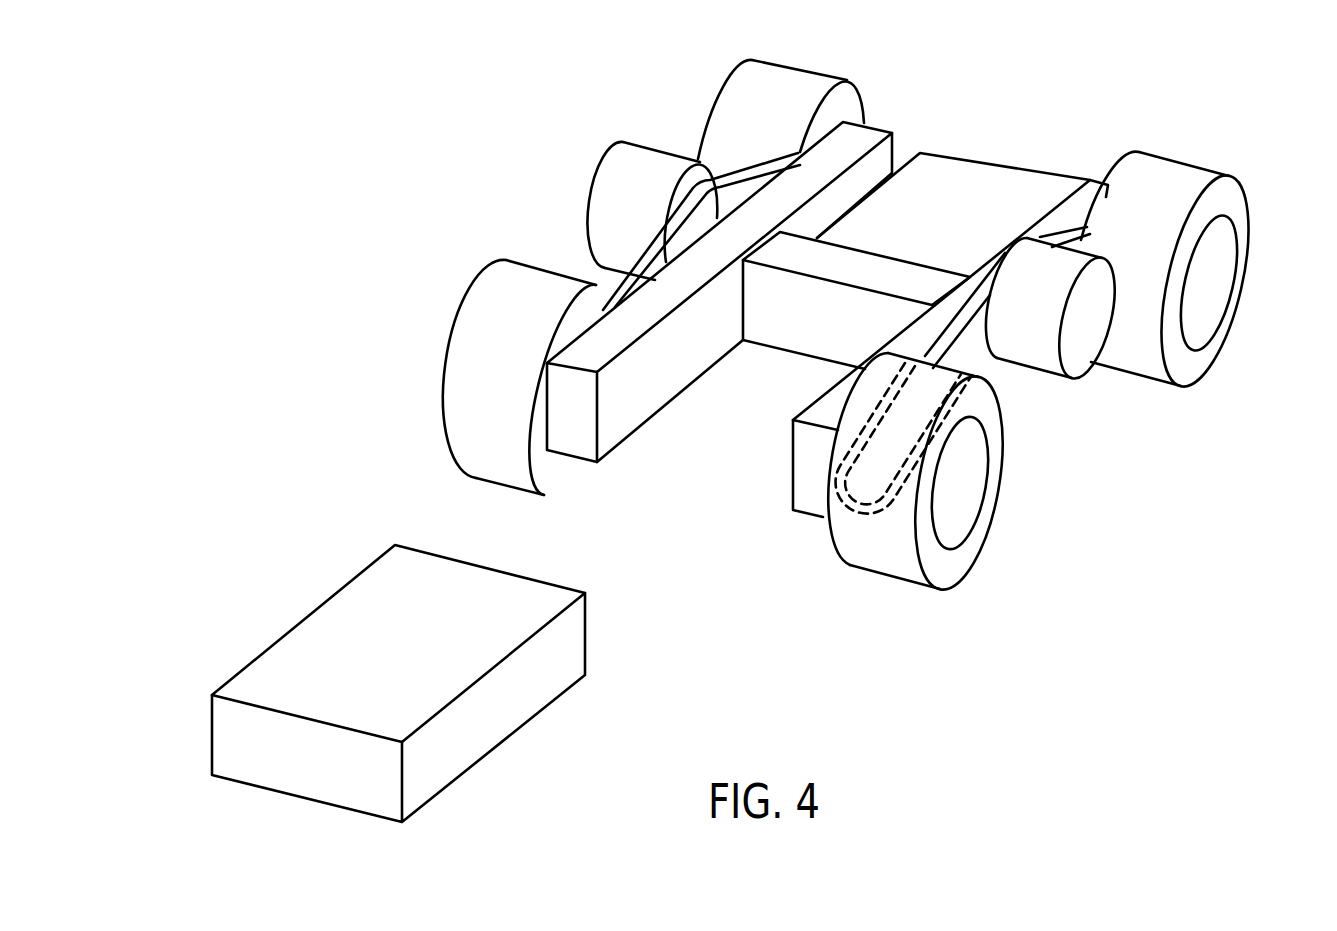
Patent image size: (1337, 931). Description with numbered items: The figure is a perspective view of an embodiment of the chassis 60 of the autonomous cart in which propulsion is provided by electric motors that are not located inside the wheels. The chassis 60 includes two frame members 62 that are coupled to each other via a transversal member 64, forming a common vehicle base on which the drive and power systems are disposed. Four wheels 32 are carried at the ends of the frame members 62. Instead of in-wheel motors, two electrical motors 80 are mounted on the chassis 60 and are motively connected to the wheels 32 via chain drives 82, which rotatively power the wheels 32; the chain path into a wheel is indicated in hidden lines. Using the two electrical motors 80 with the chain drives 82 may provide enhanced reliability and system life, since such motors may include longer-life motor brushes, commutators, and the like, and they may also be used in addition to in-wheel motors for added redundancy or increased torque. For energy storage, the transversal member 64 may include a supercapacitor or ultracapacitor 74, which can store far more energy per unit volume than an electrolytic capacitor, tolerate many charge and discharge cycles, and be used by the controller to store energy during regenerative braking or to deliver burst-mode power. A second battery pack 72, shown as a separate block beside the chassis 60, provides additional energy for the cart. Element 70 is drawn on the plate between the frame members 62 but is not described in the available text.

The wheels 32 is at (705, 125).
The chassis 60 is at (847, 339).
The frame members 62 is at (618, 432).
The transversal member 64 is at (810, 345).
The platform plate 70 is at (933, 168).
The second battery pack 72 is at (505, 710).
The supercapacitor 74 is at (895, 275).
The electrical motors 80 is at (600, 160).
The chain drives 82 is at (886, 494).